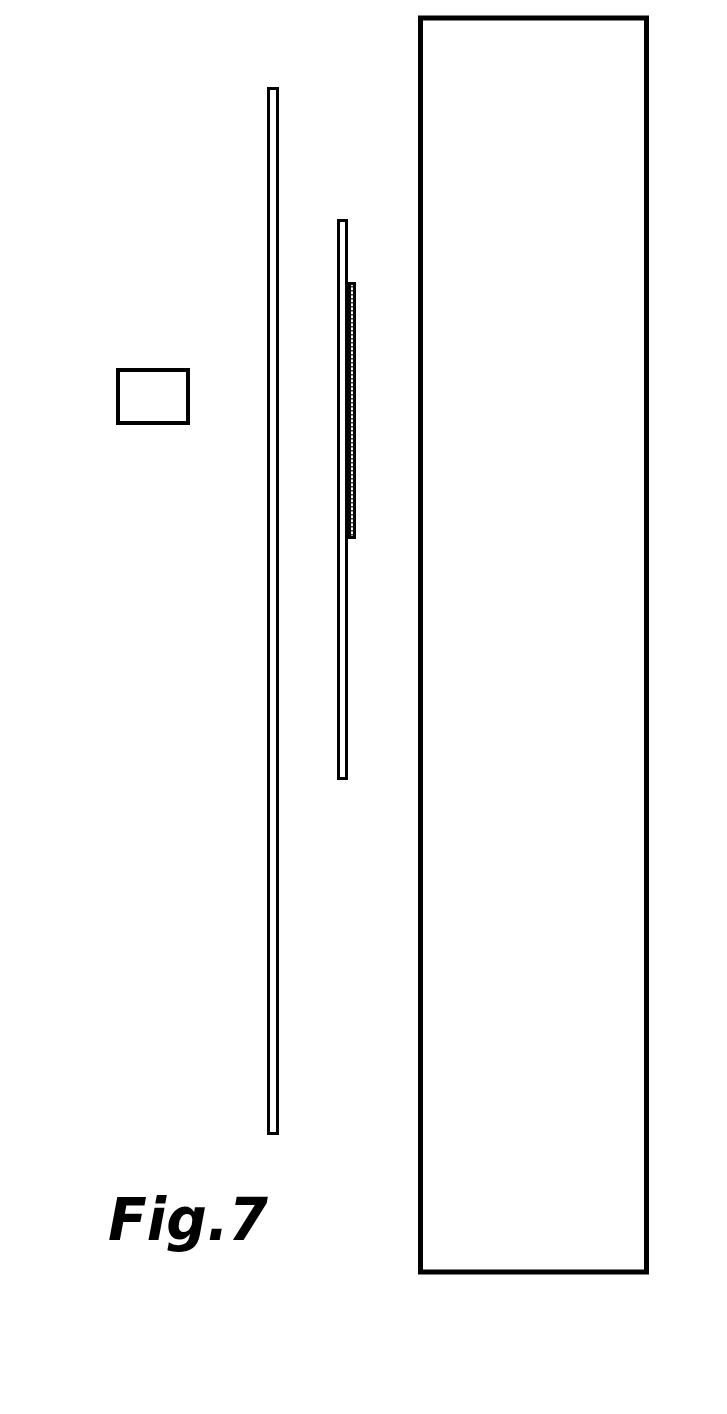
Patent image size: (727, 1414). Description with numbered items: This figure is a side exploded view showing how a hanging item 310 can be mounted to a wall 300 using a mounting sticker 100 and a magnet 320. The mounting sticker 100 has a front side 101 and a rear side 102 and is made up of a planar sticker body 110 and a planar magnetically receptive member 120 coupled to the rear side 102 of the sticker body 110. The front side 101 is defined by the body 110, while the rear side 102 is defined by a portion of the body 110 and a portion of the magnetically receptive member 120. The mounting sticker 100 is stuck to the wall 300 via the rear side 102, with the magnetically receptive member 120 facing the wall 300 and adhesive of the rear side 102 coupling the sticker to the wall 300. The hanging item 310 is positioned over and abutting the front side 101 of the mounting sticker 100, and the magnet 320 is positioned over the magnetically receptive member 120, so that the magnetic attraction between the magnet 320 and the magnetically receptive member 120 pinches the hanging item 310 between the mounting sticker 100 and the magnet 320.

The mounting sticker 100 is at (348, 134).
The front side 101 is at (311, 262).
The rear side 102 is at (366, 261).
The sticker body 110 is at (350, 636).
The magnetically receptive member 120 is at (357, 409).
The wall 300 is at (416, 1222).
The hanging item 310 is at (266, 873).
The magnet 320 is at (114, 409).